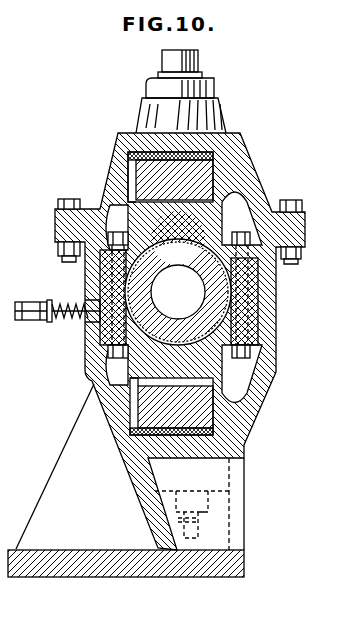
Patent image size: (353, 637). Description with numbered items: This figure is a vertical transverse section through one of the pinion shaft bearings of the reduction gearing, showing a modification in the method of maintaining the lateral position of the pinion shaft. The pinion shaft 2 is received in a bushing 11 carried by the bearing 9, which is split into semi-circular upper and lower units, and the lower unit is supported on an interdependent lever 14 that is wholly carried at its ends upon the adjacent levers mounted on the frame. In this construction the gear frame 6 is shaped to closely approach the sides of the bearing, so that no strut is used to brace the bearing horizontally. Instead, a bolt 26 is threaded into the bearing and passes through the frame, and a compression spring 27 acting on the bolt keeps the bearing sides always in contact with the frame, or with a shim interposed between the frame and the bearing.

The shaft 2 is at (222, 310).
The gear frame 6 is at (97, 550).
The pinion shaft bearing 9 is at (205, 220).
The bushing 11 is at (222, 268).
The lever 14 is at (195, 181).
The bolt 26 is at (26, 300).
The compression spring 27 is at (56, 318).